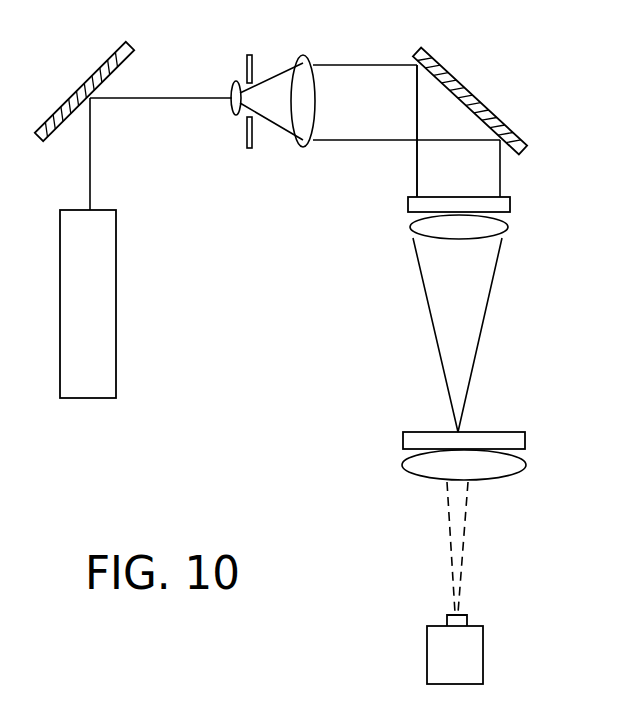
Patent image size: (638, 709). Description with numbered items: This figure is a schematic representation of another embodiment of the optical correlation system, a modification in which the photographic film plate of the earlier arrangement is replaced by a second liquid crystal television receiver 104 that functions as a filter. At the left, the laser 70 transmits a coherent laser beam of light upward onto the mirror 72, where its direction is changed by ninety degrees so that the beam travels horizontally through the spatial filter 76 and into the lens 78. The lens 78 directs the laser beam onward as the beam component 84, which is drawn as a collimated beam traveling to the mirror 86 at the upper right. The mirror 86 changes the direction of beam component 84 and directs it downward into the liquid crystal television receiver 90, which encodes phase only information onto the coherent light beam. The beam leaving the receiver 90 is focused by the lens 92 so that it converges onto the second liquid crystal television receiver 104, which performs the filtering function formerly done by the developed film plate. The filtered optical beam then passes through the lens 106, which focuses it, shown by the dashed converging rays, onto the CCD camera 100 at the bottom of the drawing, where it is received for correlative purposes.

The laser 70 is at (116, 330).
The mirror 72 is at (53, 113).
The spatial filter 76 is at (253, 72).
The lens 78 is at (300, 148).
The beam component 84 is at (417, 178).
The mirror 86 is at (507, 55).
The liquid crystal television receiver 90 is at (500, 198).
The lens 92 is at (508, 228).
The CCD camera 100 is at (483, 650).
The second liquid crystal television receiver 104 is at (486, 432).
The lens 106 is at (497, 478).